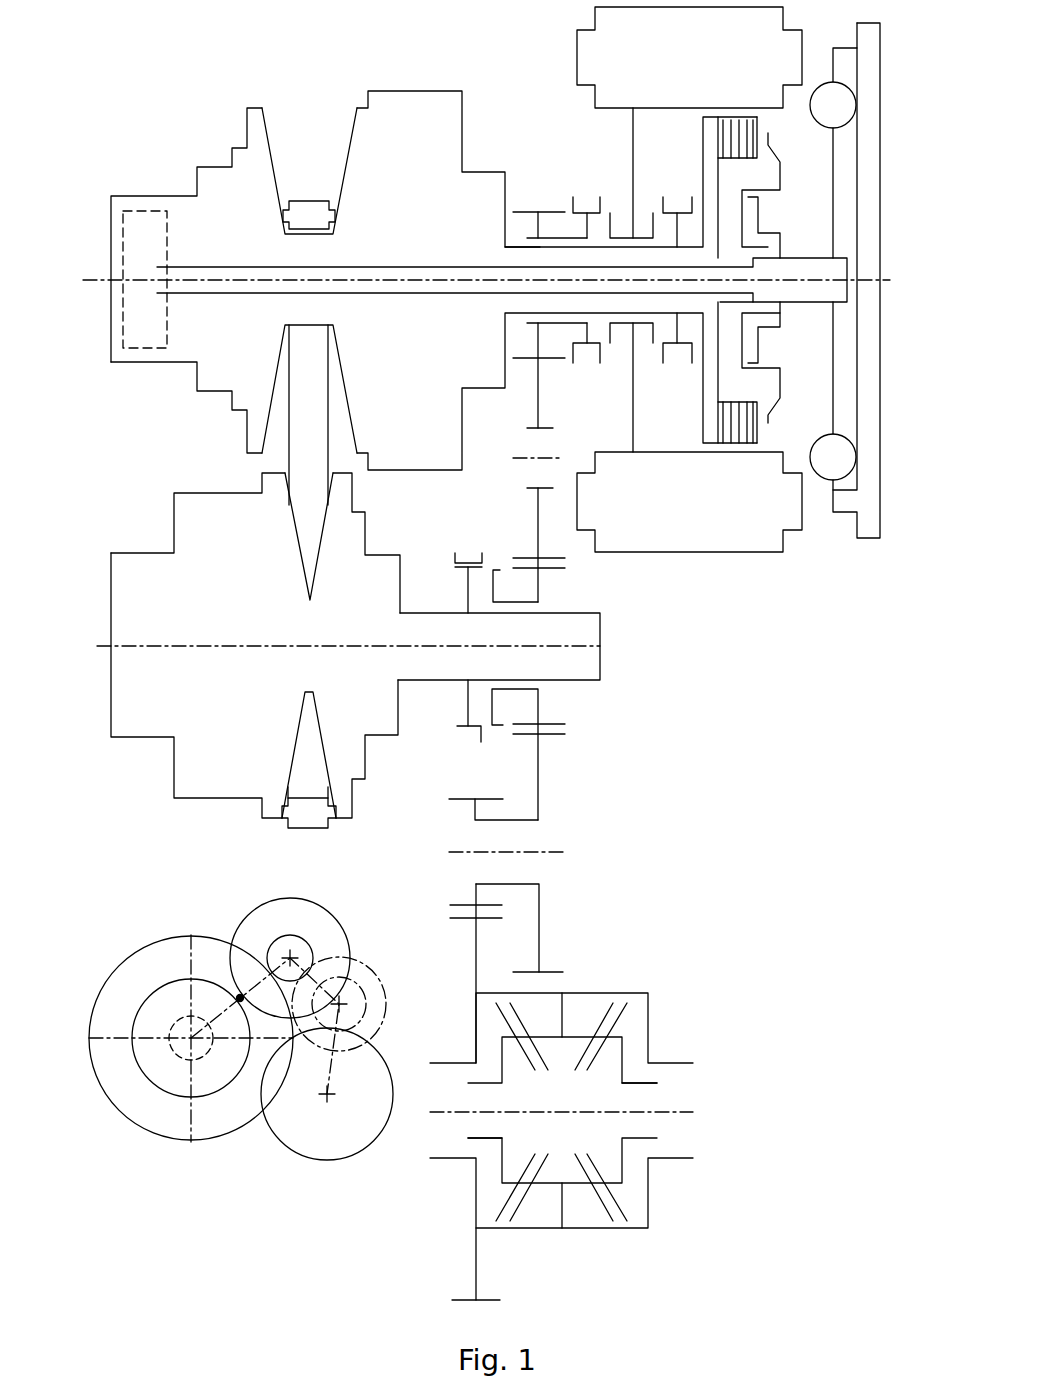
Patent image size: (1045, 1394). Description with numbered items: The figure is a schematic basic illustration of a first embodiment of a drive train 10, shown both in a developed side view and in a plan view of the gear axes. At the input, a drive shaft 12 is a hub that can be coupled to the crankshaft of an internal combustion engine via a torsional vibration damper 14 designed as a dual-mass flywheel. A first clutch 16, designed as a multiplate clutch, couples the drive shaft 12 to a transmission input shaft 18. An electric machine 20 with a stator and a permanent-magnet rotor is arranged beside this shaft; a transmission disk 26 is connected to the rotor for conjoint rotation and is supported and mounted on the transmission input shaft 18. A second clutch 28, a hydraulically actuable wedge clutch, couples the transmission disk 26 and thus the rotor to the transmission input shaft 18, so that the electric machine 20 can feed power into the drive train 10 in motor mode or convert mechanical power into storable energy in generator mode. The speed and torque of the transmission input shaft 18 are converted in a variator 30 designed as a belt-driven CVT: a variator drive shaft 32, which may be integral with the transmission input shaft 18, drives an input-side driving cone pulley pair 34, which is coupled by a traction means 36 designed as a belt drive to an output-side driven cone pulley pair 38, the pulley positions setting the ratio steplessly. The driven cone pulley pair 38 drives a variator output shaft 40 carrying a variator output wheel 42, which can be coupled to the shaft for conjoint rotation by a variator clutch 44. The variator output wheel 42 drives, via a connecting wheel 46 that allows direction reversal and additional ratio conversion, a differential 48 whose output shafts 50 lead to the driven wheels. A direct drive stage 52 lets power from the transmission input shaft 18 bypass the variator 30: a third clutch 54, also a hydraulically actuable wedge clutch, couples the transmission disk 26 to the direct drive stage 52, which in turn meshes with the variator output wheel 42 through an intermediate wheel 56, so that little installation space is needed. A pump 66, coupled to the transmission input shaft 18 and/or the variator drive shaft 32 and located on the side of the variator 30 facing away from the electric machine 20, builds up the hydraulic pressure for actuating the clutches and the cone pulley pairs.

The drive train 10 is at (740, 840).
The drive shaft 12 is at (793, 258).
The torsional vibration damper 14 is at (864, 135).
The first clutch 16 is at (766, 392).
The transmission input shaft 18 is at (703, 320).
The electric machine 20 is at (756, 526).
The transmission disk 26 is at (633, 118).
The second clutch 28 is at (687, 189).
The variator 30 is at (203, 92).
The variator drive shaft 32 is at (505, 245).
The driving cone pulley pair 34 is at (346, 122).
The traction means 36 is at (305, 416).
The driven cone pulley pair 38 is at (298, 748).
The variator output shaft 40 is at (585, 657).
The variator output wheel 42 is at (540, 698).
The variator clutch 44 is at (456, 732).
The connecting wheel 46 is at (540, 775).
The differential 48 is at (614, 978).
The output shafts 50 is at (647, 1087).
The direct drive stage 52 is at (547, 176).
The third clutch 54 is at (592, 184).
The intermediate wheel 56 is at (540, 530).
The pump 66 is at (160, 212).